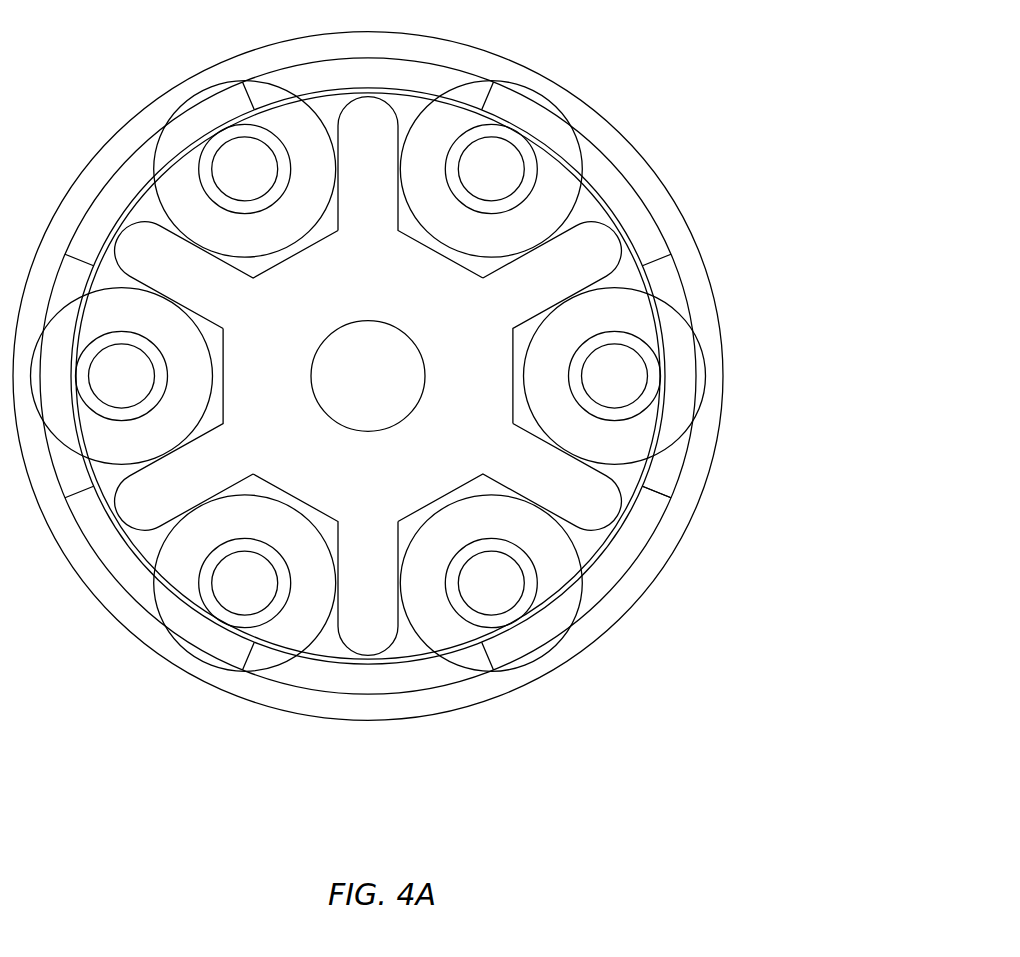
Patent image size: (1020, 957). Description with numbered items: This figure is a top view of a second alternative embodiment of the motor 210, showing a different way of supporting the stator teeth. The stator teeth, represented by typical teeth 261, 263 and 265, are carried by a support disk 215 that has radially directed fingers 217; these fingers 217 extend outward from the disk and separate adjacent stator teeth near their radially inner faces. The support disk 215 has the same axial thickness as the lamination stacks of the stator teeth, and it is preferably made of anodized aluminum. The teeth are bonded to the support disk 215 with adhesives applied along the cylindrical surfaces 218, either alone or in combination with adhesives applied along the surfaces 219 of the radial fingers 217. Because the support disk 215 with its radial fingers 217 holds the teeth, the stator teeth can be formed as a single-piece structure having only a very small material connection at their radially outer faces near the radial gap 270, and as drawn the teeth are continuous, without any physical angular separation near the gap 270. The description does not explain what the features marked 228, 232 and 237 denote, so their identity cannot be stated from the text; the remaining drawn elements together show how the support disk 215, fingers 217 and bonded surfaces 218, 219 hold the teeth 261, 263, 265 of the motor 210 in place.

The motor 210 is at (818, 265).
The support disk 215 is at (353, 257).
The radially directed fingers 217 is at (387, 118).
The cylindrical surfaces 218 is at (463, 255).
The surfaces of the radial fingers 219 is at (530, 256).
The central hub 228 is at (330, 357).
The outer ring 232 is at (710, 328).
The inner ring 237 is at (670, 277).
The stator tooth 261 is at (585, 550).
The stator tooth 263 is at (632, 477).
The stator tooth 265 is at (587, 207).
The radial gap 270 is at (617, 562).